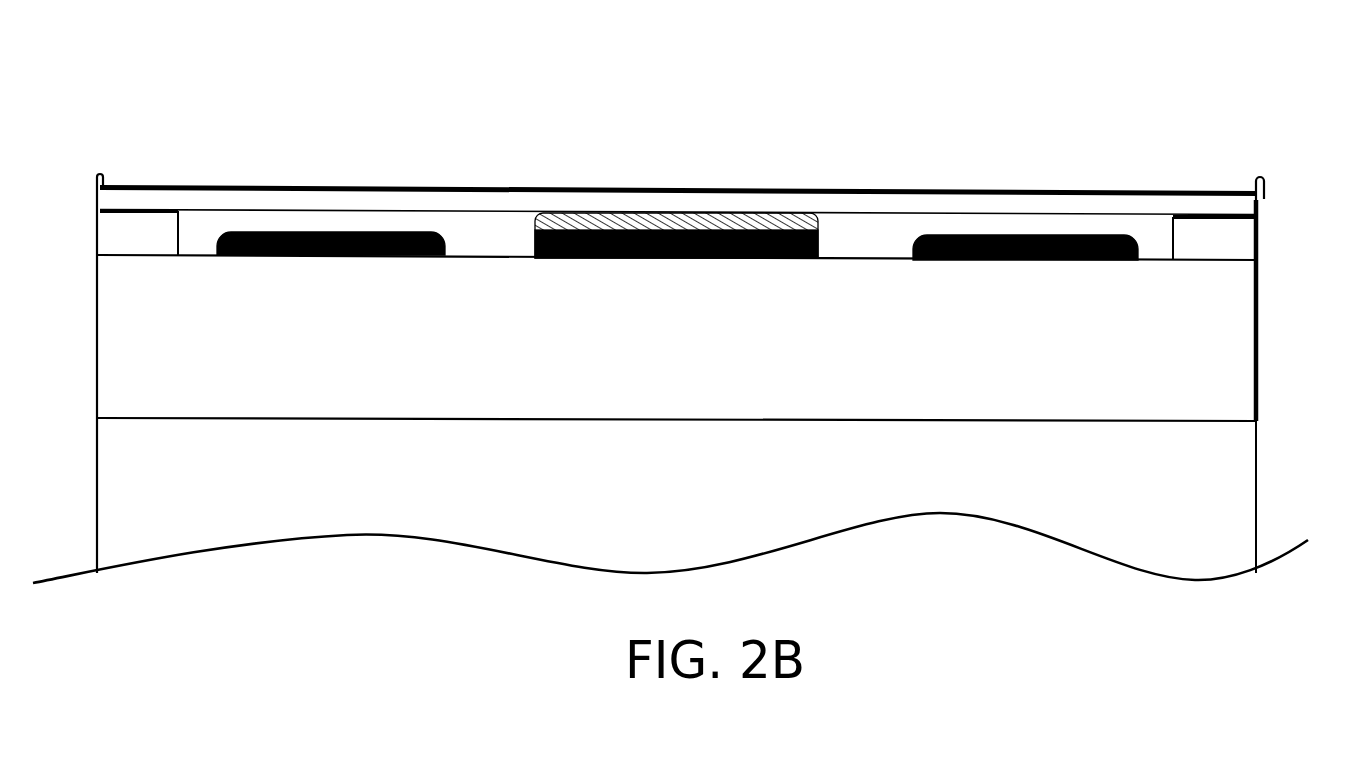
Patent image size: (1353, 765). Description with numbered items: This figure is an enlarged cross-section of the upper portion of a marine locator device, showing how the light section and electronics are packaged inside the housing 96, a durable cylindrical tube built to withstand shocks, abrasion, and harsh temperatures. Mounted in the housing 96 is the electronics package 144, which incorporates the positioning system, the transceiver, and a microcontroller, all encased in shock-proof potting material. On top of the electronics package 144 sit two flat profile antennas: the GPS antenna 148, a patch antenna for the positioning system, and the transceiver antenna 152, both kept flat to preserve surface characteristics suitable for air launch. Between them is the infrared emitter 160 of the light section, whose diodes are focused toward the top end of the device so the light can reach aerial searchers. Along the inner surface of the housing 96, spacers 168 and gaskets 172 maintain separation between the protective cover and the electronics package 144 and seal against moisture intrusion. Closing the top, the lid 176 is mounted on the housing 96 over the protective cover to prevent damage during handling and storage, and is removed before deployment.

The housing 96 is at (1256, 512).
The electronics package 144 is at (437, 336).
The GPS antenna 148 is at (392, 232).
The transceiver antenna 152 is at (993, 230).
The infrared emitter 160 is at (645, 213).
The spacers 168 is at (1228, 246).
The gaskets 172 is at (1262, 217).
The lid 176 is at (230, 187).